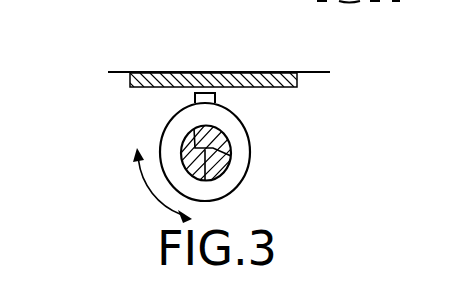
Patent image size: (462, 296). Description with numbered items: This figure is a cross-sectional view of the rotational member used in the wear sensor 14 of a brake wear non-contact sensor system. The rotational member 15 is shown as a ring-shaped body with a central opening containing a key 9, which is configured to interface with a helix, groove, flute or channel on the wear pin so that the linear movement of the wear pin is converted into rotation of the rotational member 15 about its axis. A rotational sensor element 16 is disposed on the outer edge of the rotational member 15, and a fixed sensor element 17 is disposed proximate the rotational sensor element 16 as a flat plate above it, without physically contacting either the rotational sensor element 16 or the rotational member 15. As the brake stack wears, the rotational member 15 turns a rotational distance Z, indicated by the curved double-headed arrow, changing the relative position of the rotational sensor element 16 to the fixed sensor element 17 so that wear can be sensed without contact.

The key 9 is at (188, 143).
The wear sensor 14 is at (372, 86).
The rotational member 15 is at (233, 185).
The rotational sensor element 16 is at (213, 103).
The fixed sensor element 17 is at (155, 80).
The rotational distance Z is at (153, 197).